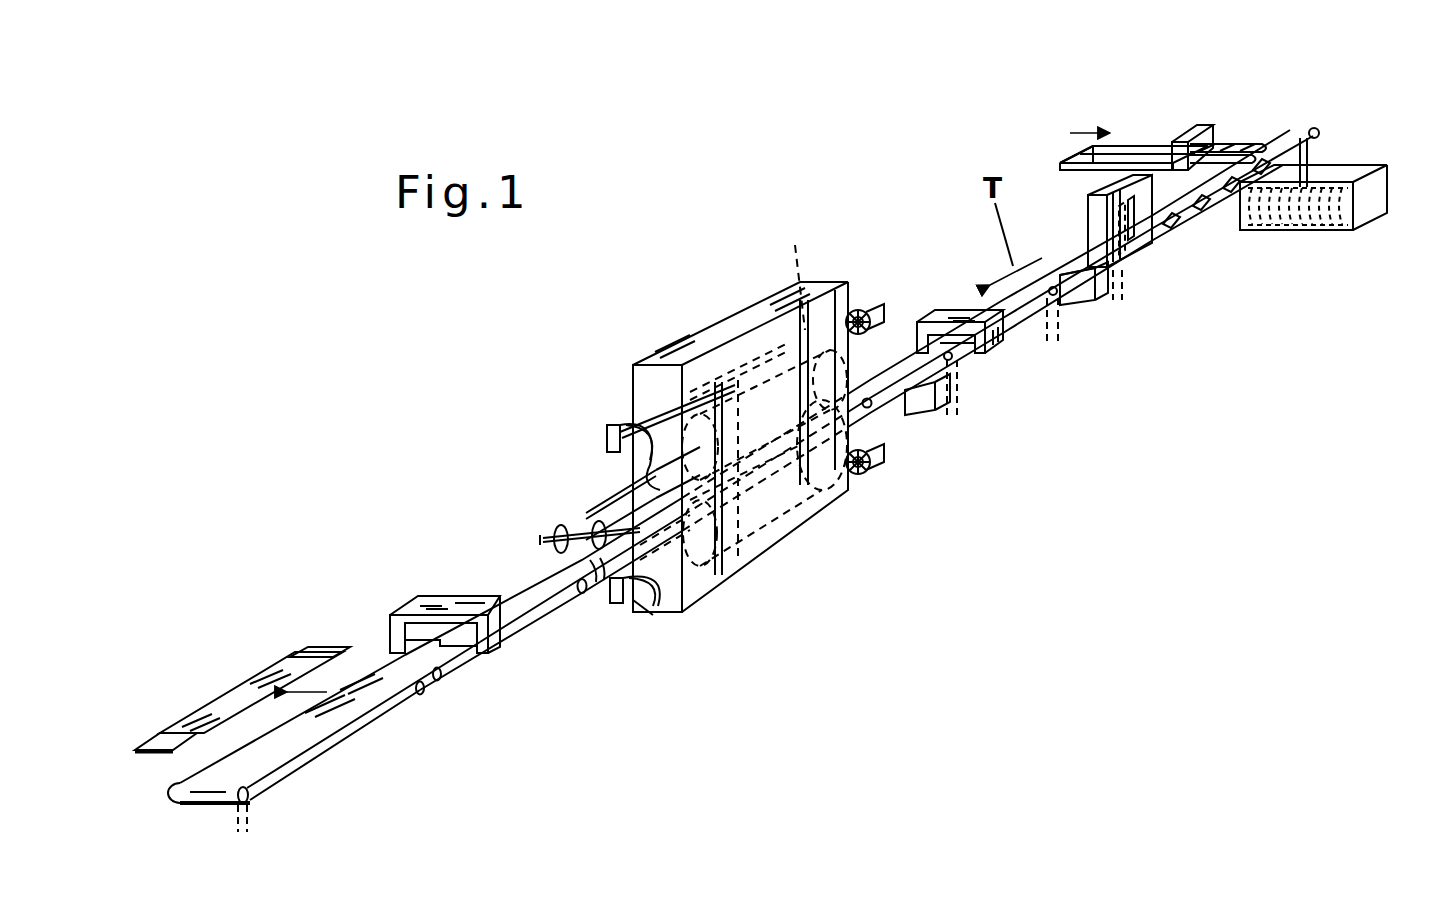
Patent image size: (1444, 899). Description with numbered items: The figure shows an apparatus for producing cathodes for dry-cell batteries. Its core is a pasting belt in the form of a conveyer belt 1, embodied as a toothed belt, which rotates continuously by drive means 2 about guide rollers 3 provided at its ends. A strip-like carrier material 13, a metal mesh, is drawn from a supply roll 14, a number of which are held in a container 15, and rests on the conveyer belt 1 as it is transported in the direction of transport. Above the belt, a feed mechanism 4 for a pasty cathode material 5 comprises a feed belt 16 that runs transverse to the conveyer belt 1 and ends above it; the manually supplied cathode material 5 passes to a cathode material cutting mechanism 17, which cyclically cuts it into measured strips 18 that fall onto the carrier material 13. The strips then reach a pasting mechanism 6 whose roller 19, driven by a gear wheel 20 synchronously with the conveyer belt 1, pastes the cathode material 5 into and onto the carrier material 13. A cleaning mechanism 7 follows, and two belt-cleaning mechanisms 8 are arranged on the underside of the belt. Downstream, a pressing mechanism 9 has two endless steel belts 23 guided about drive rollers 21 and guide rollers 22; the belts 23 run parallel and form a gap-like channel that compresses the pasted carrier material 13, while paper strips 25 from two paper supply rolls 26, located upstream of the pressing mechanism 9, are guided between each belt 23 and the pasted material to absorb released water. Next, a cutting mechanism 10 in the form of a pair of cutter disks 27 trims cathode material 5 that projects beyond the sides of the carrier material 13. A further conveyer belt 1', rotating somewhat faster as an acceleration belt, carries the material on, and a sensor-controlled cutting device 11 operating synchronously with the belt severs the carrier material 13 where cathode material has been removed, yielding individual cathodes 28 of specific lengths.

The conveyer belt 1 is at (859, 420).
The further conveyer belt 1' is at (324, 722).
The drive means 2 is at (251, 802).
The guide rollers 3 is at (249, 797).
The feed mechanism 4 is at (1150, 112).
The pasty cathode material 5 is at (377, 681).
The pasting mechanism 6 is at (1060, 202).
The cleaning mechanism 7 is at (930, 298).
The belt-cleaning mechanisms 8 is at (915, 405).
The pressing mechanism 9 is at (690, 315).
The cutting mechanism 10 is at (540, 527).
The cutting device 11 is at (425, 585).
The carrier material 13 is at (158, 747).
The supply roll 14 is at (1310, 215).
The container 15 is at (1380, 205).
The feed belt 16 is at (1077, 156).
The cathode material cutting mechanism 17 is at (1197, 124).
The measured strips 18 is at (1262, 148).
The roller 19 is at (1135, 222).
The gear wheel 20 is at (1122, 240).
The drive rollers 21 is at (700, 417).
The guide rollers 22 is at (803, 284).
The endless steel belts 23 is at (752, 385).
The paper strips 25 is at (650, 465).
The paper supply rolls 26 is at (858, 320).
The cutter disks 27 is at (597, 528).
The individual cathodes 28 is at (222, 675).